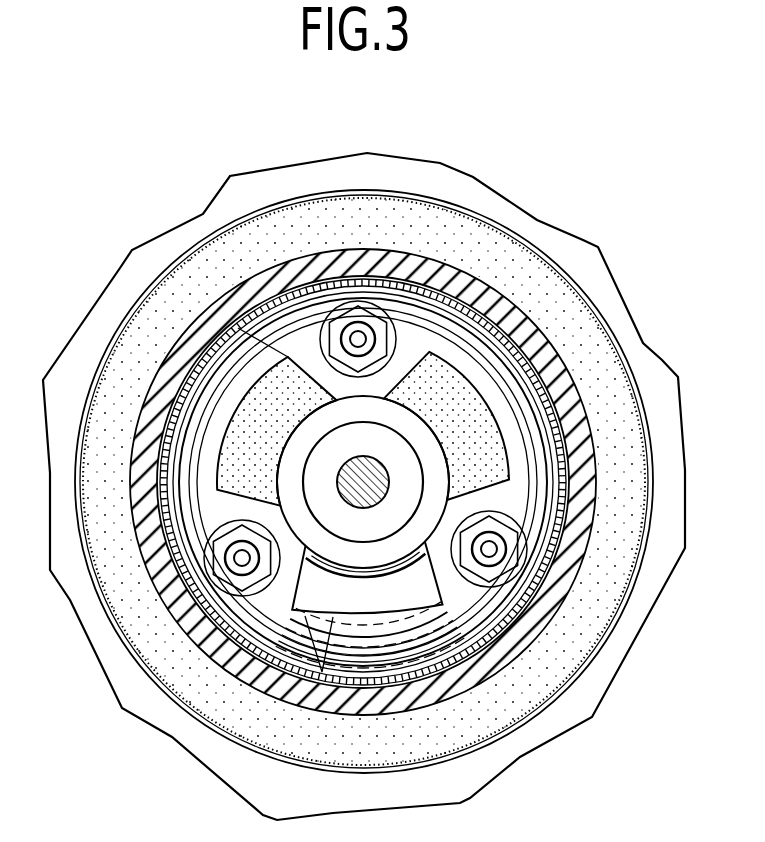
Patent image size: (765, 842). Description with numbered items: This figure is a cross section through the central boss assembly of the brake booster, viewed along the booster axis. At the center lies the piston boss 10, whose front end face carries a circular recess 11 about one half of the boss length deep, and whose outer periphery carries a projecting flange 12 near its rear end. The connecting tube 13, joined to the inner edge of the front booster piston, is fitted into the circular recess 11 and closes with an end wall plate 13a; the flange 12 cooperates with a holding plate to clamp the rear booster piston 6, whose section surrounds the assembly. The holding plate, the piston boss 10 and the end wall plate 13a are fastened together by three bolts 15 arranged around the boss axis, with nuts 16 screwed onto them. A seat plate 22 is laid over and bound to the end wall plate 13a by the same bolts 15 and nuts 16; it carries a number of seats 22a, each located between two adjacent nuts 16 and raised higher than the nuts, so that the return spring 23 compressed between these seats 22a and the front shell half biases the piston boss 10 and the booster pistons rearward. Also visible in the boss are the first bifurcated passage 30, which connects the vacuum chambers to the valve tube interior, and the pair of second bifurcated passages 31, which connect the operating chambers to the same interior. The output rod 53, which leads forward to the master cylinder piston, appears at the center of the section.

The rear booster piston 6 is at (430, 190).
The flange 12 is at (465, 228).
The connecting tube 13 is at (430, 352).
The end wall plate 13a is at (215, 520).
The piston boss 10 is at (343, 277).
The circular recess 11 is at (292, 303).
The second bifurcated passages 31 is at (222, 363).
The seat plate 22 is at (273, 610).
The seats 22a is at (203, 401).
The first bifurcated passage 30 is at (322, 674).
The output rod 53 is at (368, 493).
The bolts 15 is at (361, 330).
The nuts 16 is at (395, 328).
The return spring 23 is at (495, 551).